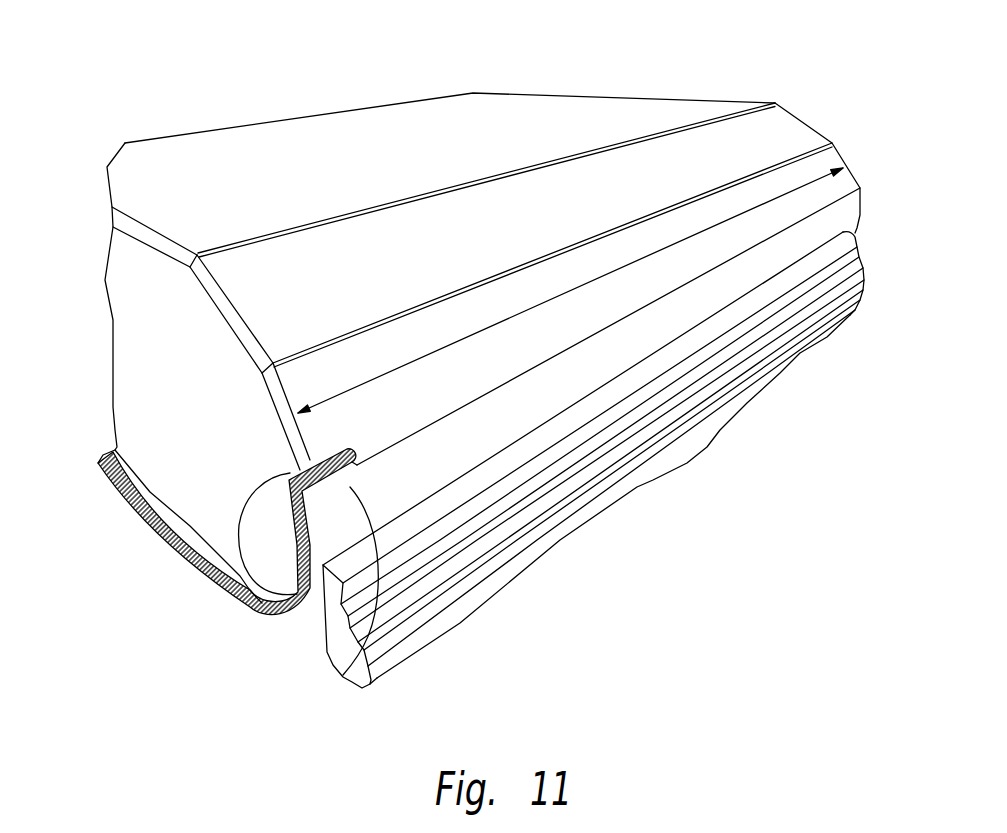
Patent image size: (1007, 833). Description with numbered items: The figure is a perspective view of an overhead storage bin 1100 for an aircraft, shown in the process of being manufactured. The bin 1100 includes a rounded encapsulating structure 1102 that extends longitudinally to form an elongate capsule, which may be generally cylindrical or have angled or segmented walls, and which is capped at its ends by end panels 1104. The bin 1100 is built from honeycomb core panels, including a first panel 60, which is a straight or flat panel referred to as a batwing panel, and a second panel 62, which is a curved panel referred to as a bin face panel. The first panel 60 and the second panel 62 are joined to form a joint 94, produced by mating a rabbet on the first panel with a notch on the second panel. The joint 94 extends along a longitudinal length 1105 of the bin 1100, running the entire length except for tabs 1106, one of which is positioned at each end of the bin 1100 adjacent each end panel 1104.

The overhead storage bin 1100 is at (215, 107).
The rounded encapsulating structure 1102 is at (583, 77).
The first panel 60 is at (420, 340).
The joint 94 is at (550, 353).
The longitudinal length 1105 is at (663, 247).
The second panel 62 is at (343, 655).
The end panel 1104 is at (178, 442).
The tab 1106 is at (237, 604).